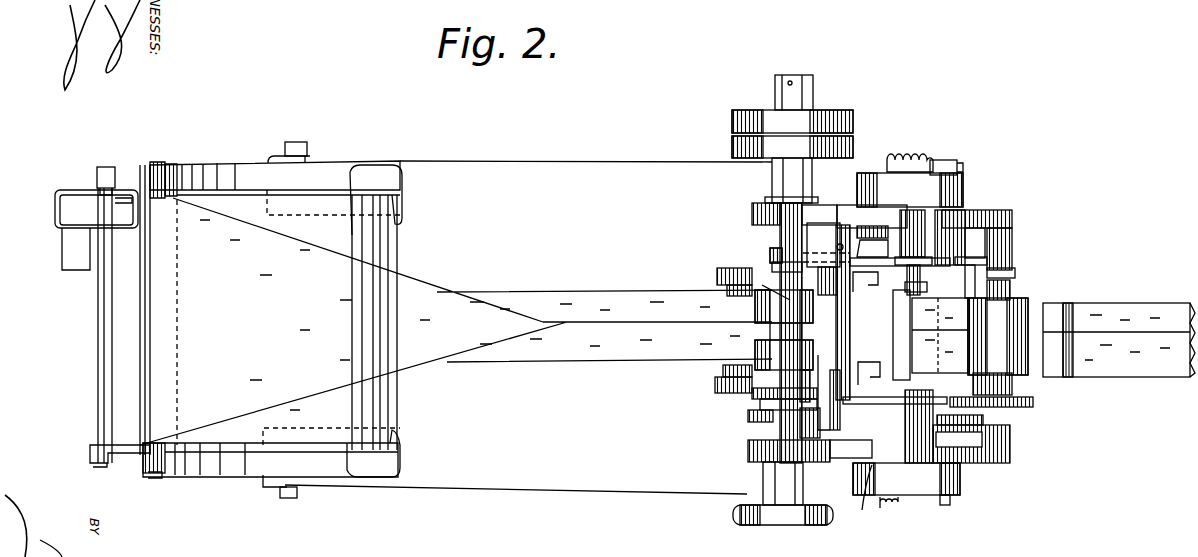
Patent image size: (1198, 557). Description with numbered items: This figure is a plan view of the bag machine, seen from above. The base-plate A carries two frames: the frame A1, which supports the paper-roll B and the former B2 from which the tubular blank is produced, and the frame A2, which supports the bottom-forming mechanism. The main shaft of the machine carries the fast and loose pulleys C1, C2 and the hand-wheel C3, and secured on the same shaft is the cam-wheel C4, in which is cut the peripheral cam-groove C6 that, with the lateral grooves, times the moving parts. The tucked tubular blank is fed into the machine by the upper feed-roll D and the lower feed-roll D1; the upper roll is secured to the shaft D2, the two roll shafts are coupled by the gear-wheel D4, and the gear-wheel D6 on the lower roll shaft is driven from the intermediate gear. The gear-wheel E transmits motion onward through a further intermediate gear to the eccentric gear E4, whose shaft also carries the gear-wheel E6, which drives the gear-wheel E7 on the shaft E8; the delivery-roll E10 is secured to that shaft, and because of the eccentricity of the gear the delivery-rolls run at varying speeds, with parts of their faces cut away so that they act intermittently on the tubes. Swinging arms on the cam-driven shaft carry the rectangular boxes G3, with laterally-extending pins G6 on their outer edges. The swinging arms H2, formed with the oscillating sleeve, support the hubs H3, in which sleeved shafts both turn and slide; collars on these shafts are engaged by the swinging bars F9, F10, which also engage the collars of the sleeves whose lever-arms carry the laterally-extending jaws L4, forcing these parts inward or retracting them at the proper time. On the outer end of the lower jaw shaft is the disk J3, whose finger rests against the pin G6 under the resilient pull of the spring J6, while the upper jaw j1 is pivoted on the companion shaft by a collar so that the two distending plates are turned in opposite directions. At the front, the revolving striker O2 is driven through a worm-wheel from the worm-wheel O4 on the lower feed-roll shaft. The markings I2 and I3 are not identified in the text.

The base-plate A is at (456, 327).
The frame A1 is at (276, 198).
The frame A2 is at (872, 216).
The paper-roll B is at (145, 440).
The former B2 is at (385, 385).
The fast pulley C1 is at (792, 104).
The loose pulley C2 is at (792, 147).
The hand-wheel C3 is at (778, 525).
The cam-wheel C4 is at (722, 270).
The peripheral cam-groove C6 is at (727, 292).
The upper feed-roll D is at (784, 330).
The lower feed-roll D1 is at (752, 392).
The shaft D2 is at (775, 283).
The gear-wheel D4 is at (748, 416).
The gear-wheel D6 is at (765, 438).
The gear-wheel E is at (838, 448).
The delivery-roll E10 is at (970, 336).
The eccentric gear E4 is at (965, 420).
The gear-wheel E6 is at (1012, 389).
The gear-wheel E7 is at (1033, 402).
The shaft E8 is at (1010, 288).
The swinging bar F9 is at (950, 275).
The swinging bar F10 is at (862, 499).
The rectangular box G3 is at (910, 190).
The pin G6 is at (945, 505).
The swinging arm H2 is at (872, 241).
The hub H3 is at (914, 336).
The arm I2 is at (900, 358).
The arm I3 is at (901, 335).
The upper jaw j1 is at (900, 333).
The disk J3 is at (940, 160).
The spring J6 is at (903, 158).
The jaw L4 is at (870, 370).
The revolving striker O2 is at (840, 319).
The worm-wheel O4 is at (770, 258).